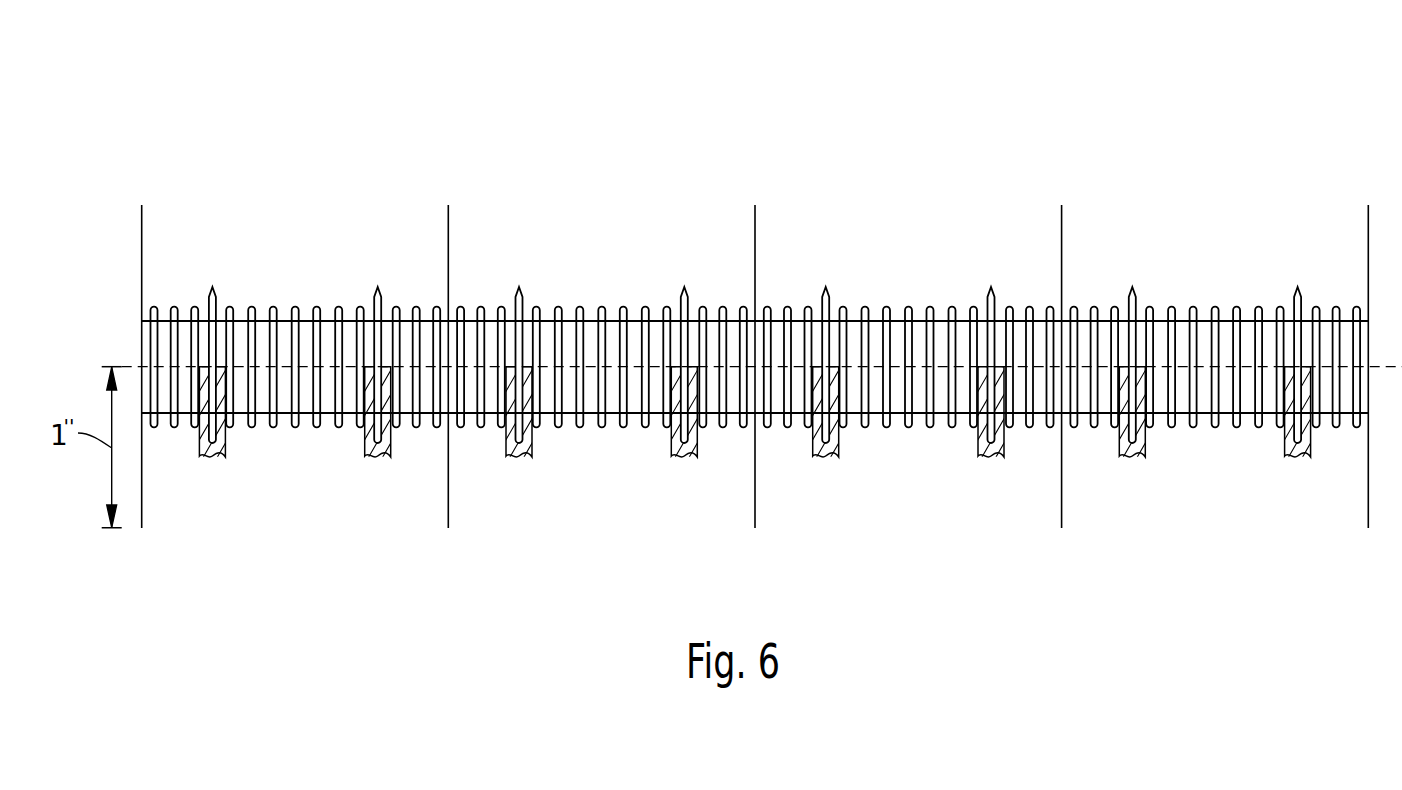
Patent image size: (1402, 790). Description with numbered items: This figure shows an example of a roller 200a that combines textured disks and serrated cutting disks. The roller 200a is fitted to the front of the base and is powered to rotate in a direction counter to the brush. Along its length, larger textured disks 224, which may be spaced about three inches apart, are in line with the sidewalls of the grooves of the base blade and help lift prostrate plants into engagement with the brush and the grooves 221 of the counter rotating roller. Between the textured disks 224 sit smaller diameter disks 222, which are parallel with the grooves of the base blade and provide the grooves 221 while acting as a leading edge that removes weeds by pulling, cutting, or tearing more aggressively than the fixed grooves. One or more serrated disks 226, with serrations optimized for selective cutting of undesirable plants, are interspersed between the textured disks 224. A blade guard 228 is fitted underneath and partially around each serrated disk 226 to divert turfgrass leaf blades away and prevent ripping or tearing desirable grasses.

The roller 200a is at (752, 290).
The grooves 221 is at (284, 417).
The smaller diameter disks 222 is at (339, 427).
The textured disks 224 is at (755, 213).
The serrated disks 226 is at (519, 292).
The blade guard 228 is at (517, 457).